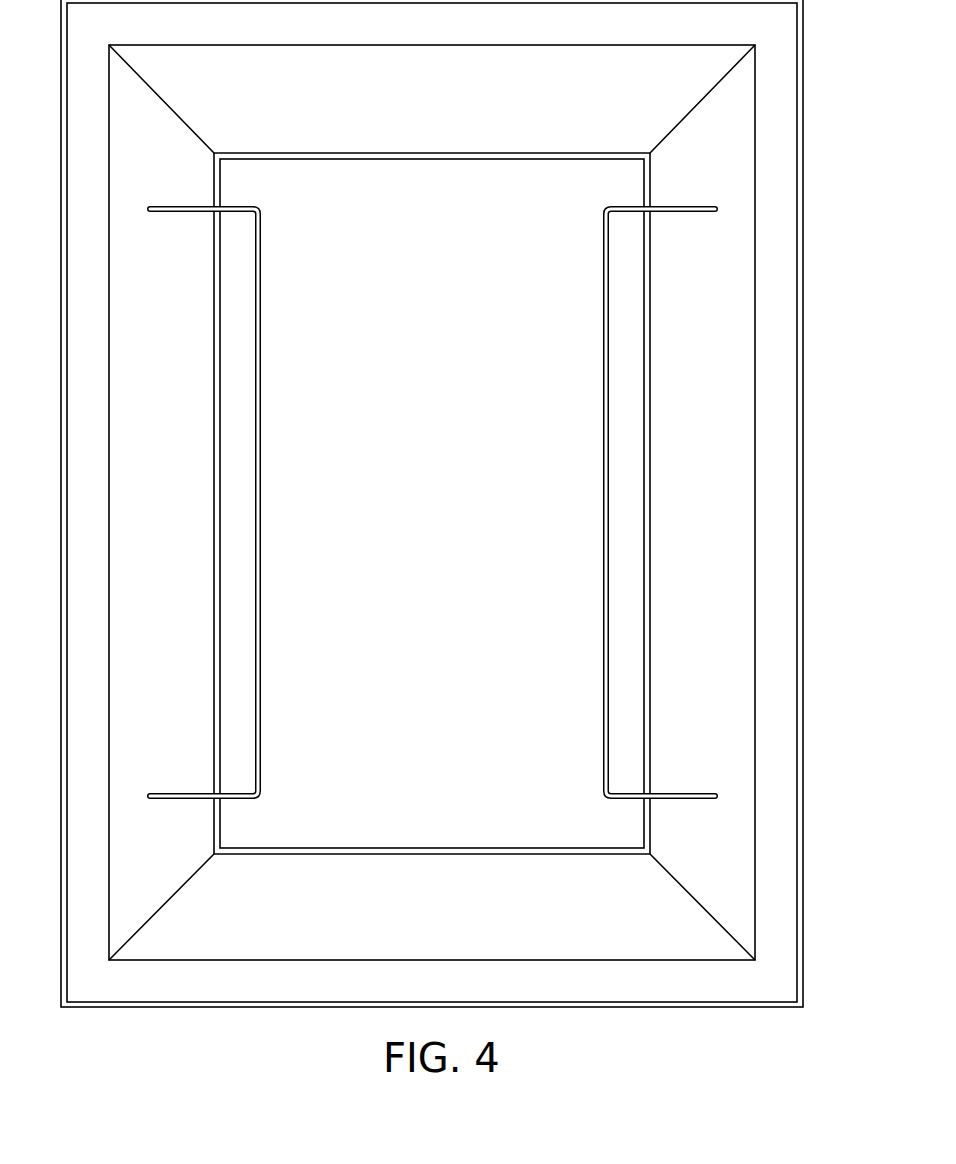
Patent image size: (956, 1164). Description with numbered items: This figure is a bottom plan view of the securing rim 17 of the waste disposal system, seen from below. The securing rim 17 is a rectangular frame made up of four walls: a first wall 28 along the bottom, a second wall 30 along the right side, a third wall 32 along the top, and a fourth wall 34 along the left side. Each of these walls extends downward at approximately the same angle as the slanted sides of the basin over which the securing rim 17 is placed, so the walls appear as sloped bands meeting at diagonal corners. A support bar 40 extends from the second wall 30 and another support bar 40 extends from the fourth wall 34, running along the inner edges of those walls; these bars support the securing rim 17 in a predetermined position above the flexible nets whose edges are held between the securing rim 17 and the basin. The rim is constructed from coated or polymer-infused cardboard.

The securing rim 17 is at (787, 715).
The first wall 28 is at (433, 914).
The second wall 30 is at (718, 408).
The third wall 32 is at (483, 118).
The fourth wall 34 is at (163, 480).
The support bar 40 is at (603, 613).